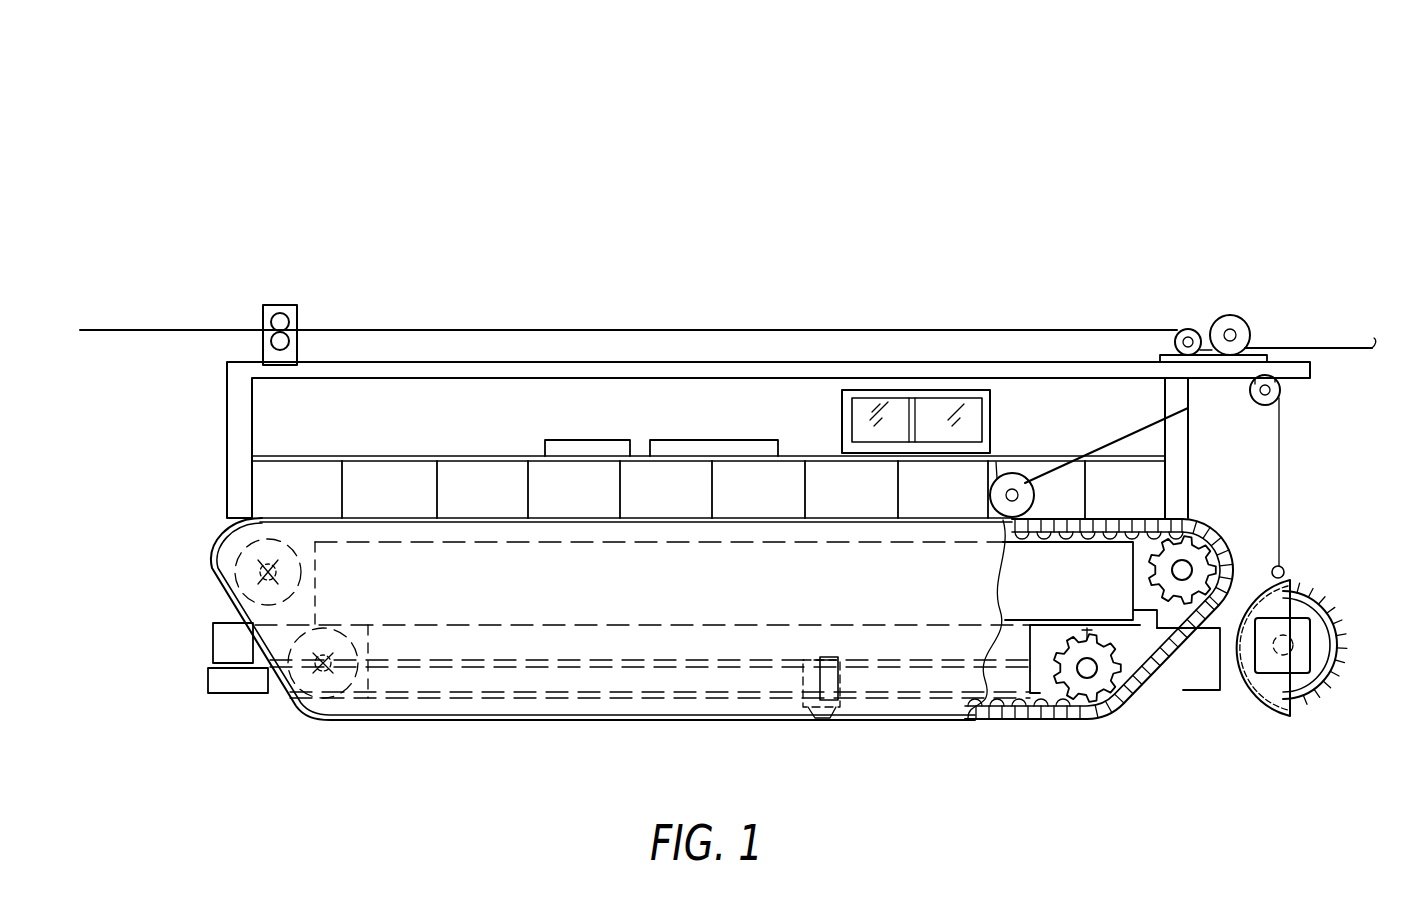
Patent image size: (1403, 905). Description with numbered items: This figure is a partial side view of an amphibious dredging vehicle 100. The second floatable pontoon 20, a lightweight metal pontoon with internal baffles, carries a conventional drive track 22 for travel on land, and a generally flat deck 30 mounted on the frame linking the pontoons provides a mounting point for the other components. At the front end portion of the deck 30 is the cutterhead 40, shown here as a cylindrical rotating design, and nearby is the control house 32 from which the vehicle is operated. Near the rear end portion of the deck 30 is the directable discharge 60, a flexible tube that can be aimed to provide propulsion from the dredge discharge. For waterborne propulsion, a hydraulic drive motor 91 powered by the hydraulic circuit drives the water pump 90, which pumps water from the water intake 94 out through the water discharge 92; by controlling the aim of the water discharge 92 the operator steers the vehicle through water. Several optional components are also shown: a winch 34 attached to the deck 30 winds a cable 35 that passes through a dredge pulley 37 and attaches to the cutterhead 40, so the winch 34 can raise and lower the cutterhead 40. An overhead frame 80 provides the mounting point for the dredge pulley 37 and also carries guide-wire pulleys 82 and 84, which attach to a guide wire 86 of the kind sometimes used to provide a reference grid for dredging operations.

The amphibious dredging vehicle 100 is at (292, 156).
The second floatable pontoon 20 is at (262, 707).
The drive track 22 is at (1043, 720).
The deck 30 is at (216, 526).
The control house 32 is at (992, 417).
The winch 34 is at (1023, 477).
The cable 35 is at (1127, 437).
The dredge pulley 37 is at (1280, 395).
The cutterhead 40 is at (1298, 718).
The directable discharge 60 is at (213, 640).
The overhead frame 80 is at (957, 362).
The guide-wire pulley 82 is at (1242, 320).
The guide-wire pulley 84 is at (297, 305).
The guide wire 86 is at (582, 328).
The water pump 90 is at (835, 727).
The hydraulic drive motor 91 is at (803, 728).
The water discharge 92 is at (208, 680).
The water intake 94 is at (1172, 688).